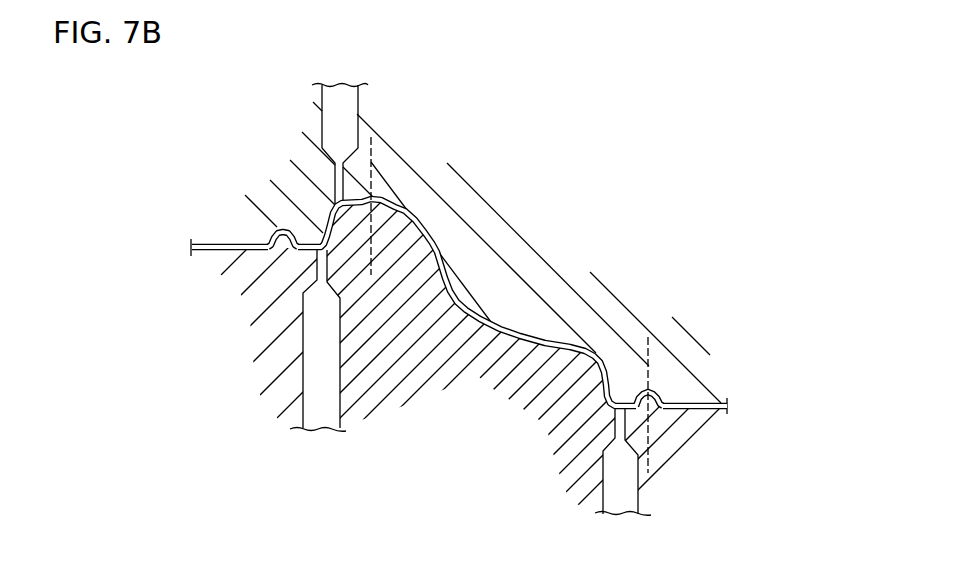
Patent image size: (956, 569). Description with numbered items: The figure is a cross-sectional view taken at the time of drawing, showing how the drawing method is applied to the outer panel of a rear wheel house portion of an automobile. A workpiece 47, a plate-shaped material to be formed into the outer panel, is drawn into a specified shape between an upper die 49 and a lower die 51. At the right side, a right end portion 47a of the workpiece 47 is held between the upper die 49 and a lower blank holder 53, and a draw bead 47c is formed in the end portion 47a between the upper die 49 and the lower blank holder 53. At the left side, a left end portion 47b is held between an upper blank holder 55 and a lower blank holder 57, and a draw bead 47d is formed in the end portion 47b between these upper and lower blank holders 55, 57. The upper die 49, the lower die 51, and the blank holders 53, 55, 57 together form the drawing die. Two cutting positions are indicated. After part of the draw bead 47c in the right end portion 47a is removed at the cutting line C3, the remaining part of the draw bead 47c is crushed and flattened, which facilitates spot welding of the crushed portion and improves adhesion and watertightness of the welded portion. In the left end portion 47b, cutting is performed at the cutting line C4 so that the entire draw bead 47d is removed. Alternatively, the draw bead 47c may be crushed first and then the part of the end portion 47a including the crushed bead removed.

The workpiece 47 is at (461, 300).
The right end portion 47a is at (702, 401).
The left end portion 47b is at (222, 242).
The draw bead 47c is at (655, 390).
The draw bead 47d is at (277, 227).
The upper die 49 is at (512, 178).
The lower die 51 is at (485, 403).
The lower blank holder 53 is at (726, 436).
The upper blank holder 55 is at (262, 161).
The lower blank holder 57 is at (247, 345).
The cutting line C3 is at (649, 357).
The cutting line C4 is at (372, 158).